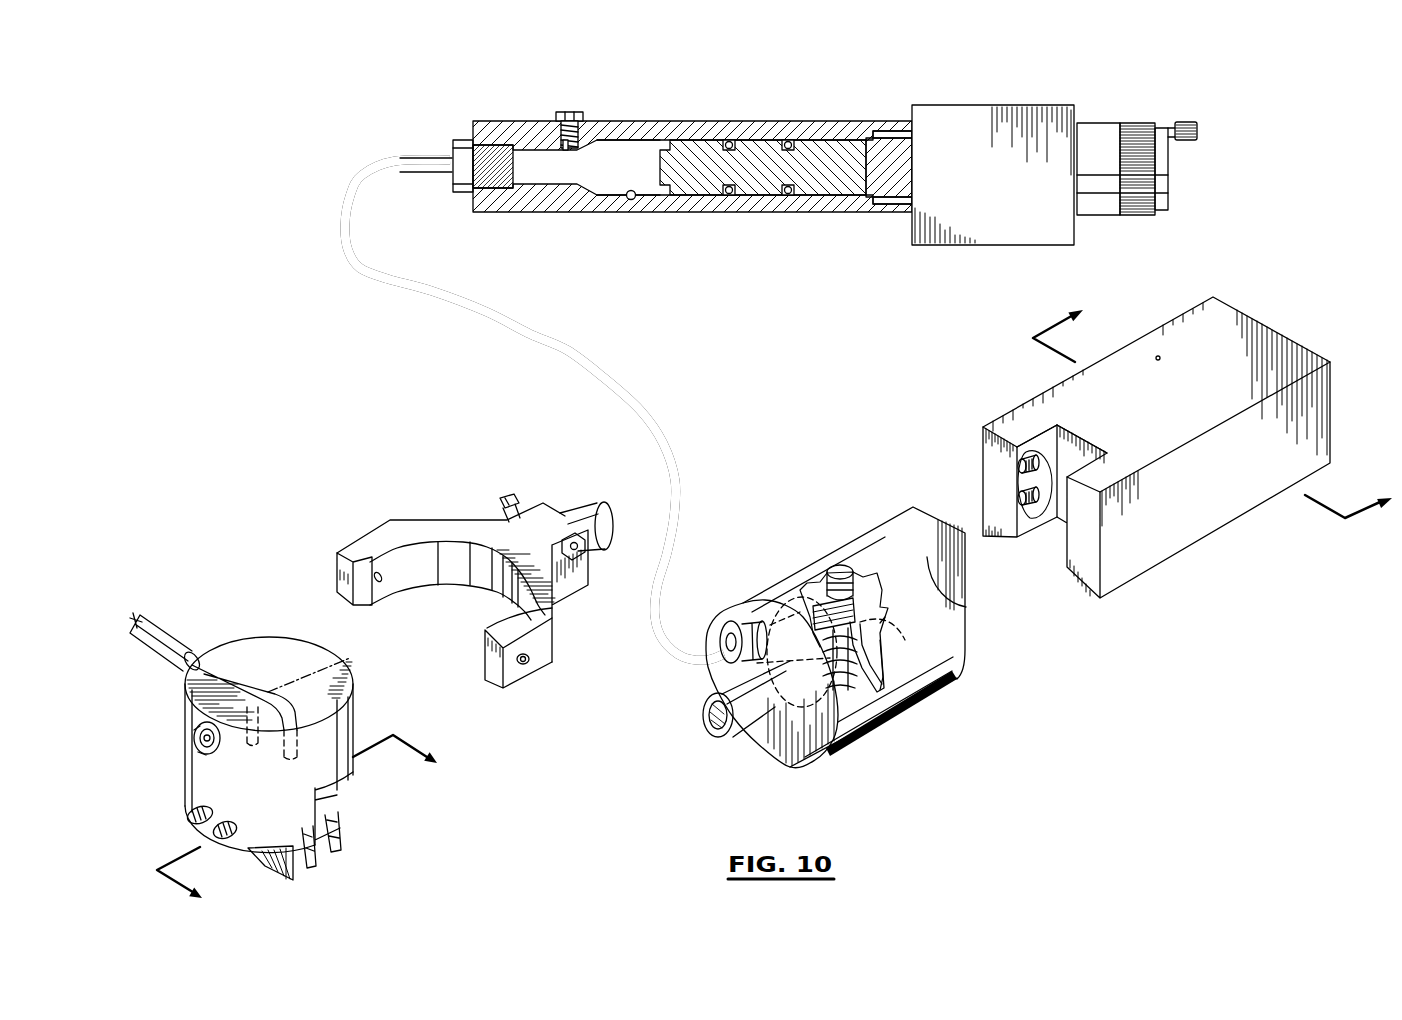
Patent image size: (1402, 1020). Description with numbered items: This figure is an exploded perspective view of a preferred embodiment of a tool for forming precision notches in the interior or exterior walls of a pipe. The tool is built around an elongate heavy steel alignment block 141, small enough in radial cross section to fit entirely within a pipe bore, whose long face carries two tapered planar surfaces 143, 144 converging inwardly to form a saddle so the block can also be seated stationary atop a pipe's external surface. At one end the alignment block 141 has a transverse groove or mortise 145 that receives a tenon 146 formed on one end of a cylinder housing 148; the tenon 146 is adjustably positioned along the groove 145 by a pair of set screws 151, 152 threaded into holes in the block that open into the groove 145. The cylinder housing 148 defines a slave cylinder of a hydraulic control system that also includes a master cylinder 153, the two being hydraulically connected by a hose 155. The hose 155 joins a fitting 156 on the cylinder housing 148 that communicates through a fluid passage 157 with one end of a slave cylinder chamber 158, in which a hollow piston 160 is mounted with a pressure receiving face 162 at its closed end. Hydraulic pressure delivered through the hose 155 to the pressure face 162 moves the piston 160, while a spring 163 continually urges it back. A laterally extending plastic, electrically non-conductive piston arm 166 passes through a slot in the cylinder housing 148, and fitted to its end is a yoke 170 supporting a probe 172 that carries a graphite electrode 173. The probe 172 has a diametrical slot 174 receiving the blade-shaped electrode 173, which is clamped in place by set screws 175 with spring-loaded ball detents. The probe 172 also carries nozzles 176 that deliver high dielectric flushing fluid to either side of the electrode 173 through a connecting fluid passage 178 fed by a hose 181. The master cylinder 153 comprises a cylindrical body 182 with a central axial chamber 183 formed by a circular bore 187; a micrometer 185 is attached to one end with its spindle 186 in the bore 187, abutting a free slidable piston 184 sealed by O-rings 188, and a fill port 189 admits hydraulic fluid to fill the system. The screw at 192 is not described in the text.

The alignment block 141 is at (1152, 469).
The tapered planar surface 143 is at (998, 540).
The tapered planar surface 144 is at (1080, 582).
The transverse groove 145 is at (1060, 437).
The tenon 146 is at (882, 624).
The cylinder housing 148 is at (960, 652).
The set screw 151 is at (1020, 496).
The set screw 152 is at (1020, 466).
The master cylinder 153 is at (832, 167).
The hose 155 is at (493, 315).
The fitting 156 is at (735, 622).
The fluid passage 157 is at (790, 612).
The slave cylinder chamber 158 is at (893, 636).
The hollow piston 160 is at (913, 668).
The pressure receiving face 162 is at (818, 602).
The spring 163 is at (880, 678).
The piston arm 166 is at (735, 738).
The yoke 170 is at (440, 614).
The probe 172 is at (277, 736).
The graphite electrode 173 is at (262, 861).
The diametrical slot 174 is at (318, 808).
The set screws 175 is at (215, 829).
The nozzles 176 is at (343, 843).
The fluid passage 178 is at (294, 705).
The hose 181 is at (171, 642).
The cylindrical body 182 is at (586, 120).
The central axial chamber 183 is at (630, 150).
The free slidable piston 184 is at (765, 197).
The micrometer 185 is at (1030, 100).
The micrometer spindle 186 is at (886, 165).
The circular bore 187 is at (628, 198).
The O-rings 188 is at (728, 200).
The fill port 189 is at (560, 111).
The screw 192 is at (526, 668).